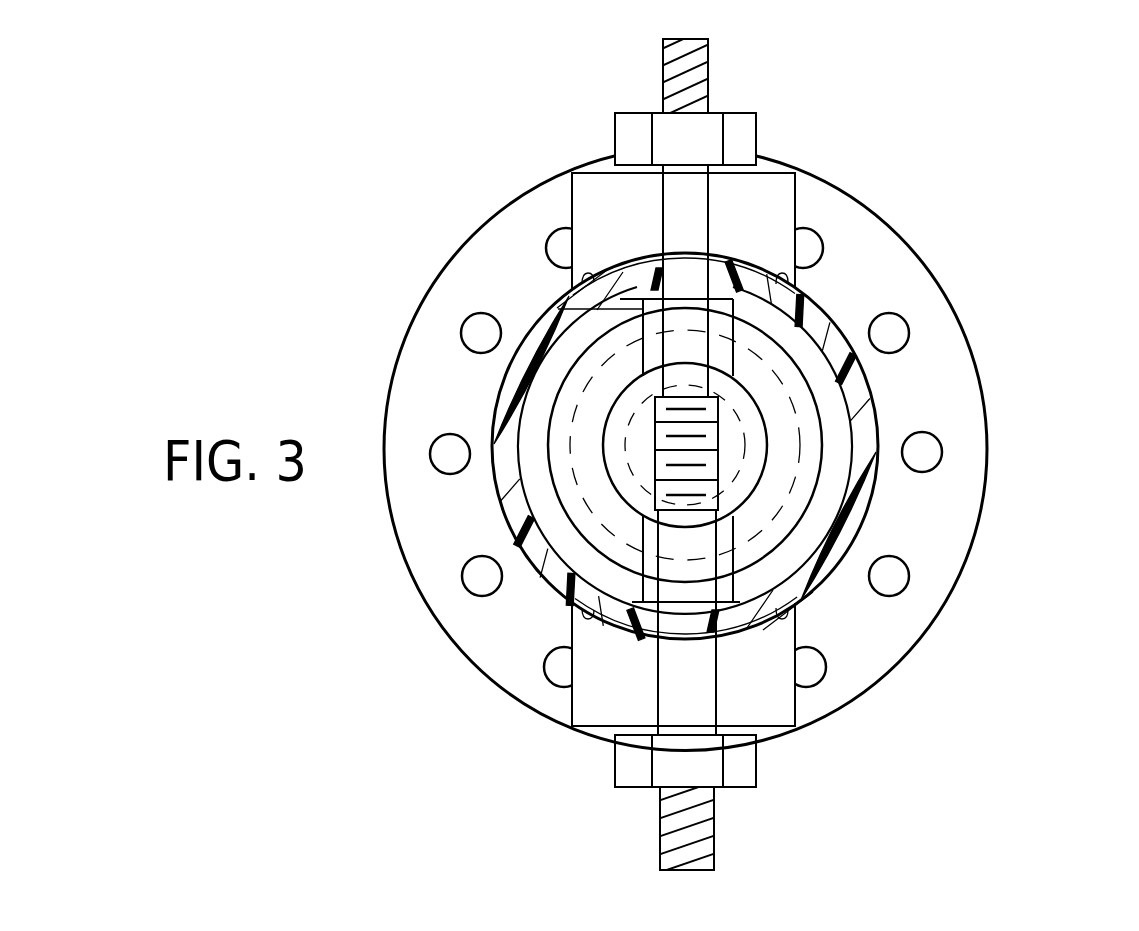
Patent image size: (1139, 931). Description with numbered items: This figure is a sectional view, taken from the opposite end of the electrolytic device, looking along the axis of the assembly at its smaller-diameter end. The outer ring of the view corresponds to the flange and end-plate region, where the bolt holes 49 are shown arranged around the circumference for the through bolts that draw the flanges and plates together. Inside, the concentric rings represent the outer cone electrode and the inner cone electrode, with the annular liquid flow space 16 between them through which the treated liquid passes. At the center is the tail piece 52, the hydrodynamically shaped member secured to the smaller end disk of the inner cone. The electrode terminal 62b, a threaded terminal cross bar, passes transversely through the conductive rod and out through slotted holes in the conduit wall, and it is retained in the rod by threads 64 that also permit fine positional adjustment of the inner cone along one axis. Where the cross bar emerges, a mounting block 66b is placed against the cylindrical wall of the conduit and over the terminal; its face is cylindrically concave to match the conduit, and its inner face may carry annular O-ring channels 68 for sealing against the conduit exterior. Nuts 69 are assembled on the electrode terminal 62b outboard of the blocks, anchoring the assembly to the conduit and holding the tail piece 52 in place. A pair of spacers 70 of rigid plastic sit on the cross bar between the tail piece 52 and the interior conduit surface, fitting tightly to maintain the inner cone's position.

The annular liquid flow space 16 is at (540, 433).
The bolt holes 49 is at (943, 452).
The tail piece 52 is at (770, 437).
The electrode terminal 62b is at (693, 557).
The threads 64 is at (714, 436).
The mounting block 66b is at (777, 186).
The annular O-ring channels 68 is at (808, 306).
The nuts 69 is at (738, 113).
The spacers 70 is at (640, 309).